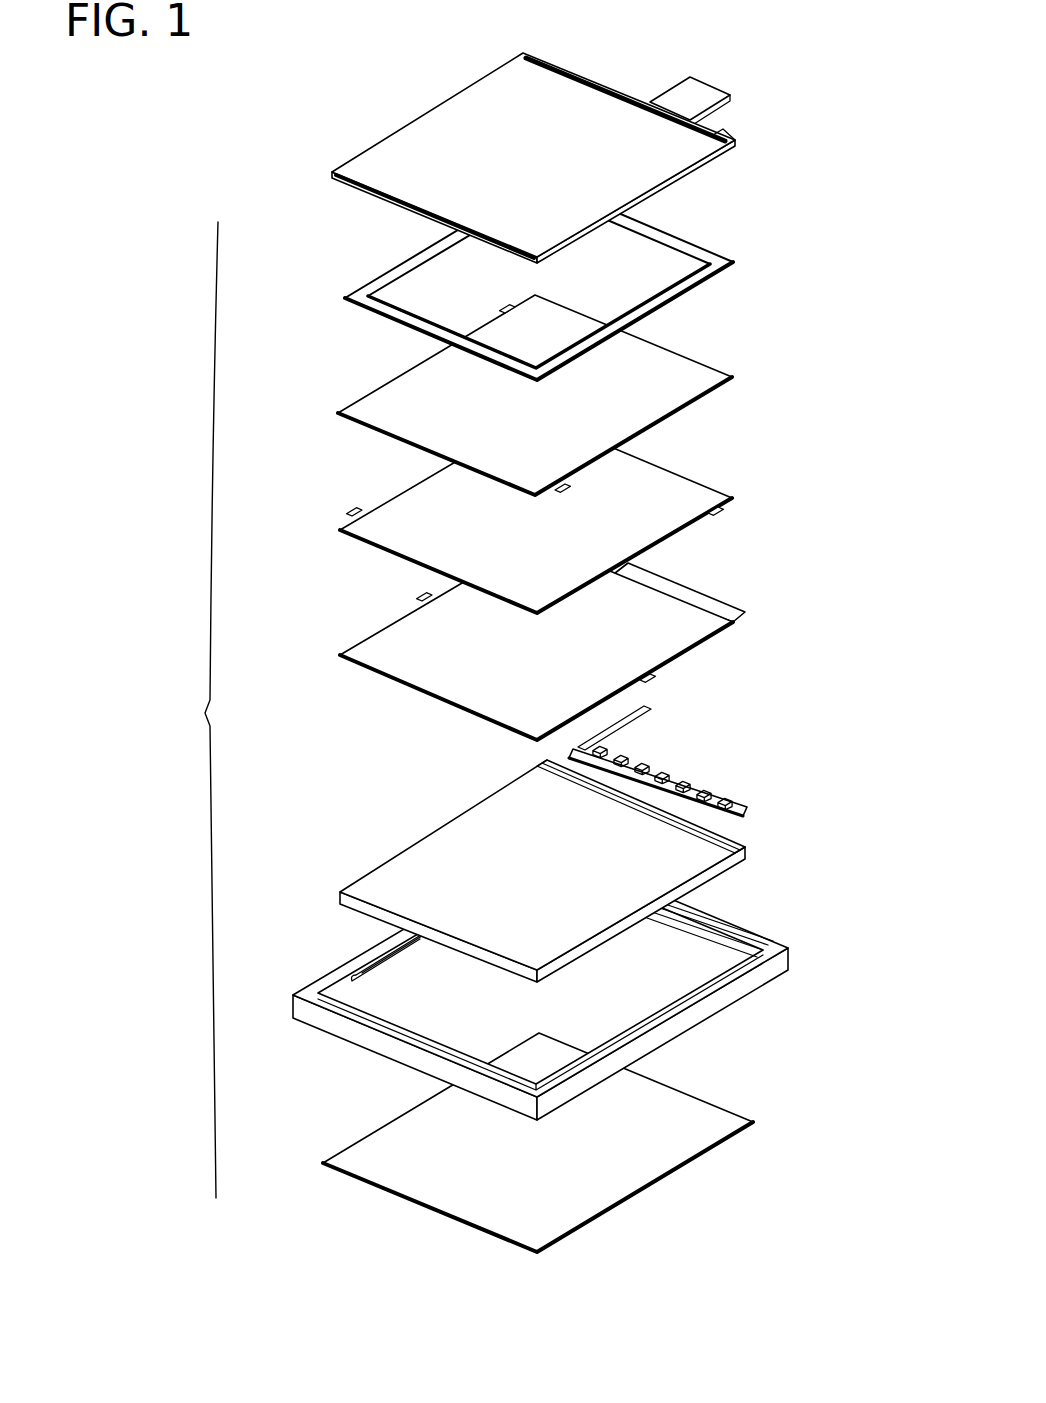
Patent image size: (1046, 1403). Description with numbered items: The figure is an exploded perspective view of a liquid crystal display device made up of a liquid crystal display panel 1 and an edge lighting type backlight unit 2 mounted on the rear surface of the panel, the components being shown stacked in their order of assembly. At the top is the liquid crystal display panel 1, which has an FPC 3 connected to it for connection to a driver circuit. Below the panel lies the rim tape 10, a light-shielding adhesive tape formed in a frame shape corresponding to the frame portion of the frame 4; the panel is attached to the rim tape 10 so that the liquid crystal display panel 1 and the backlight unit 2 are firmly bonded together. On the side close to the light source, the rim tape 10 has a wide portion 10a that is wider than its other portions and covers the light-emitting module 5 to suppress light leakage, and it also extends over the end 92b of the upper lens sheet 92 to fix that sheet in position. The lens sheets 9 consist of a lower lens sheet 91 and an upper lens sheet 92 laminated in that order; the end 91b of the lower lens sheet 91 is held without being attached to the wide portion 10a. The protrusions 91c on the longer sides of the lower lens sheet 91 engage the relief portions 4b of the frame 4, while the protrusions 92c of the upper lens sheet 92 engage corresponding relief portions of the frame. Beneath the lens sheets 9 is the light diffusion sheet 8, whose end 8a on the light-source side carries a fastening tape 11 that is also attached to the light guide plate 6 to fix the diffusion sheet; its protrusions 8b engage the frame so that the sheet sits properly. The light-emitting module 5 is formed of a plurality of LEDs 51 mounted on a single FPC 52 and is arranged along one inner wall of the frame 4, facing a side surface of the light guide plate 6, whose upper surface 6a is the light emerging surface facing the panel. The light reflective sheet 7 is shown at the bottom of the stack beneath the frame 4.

The liquid crystal display panel 1 is at (506, 152).
The backlight unit 2 is at (199, 710).
The FPC 3 is at (708, 90).
The frame 4 is at (517, 983).
The relief portions 4b is at (350, 978).
The light-emitting module 5 is at (703, 762).
The LEDs 51 is at (663, 767).
The FPC 52 is at (743, 805).
The light guide plate 6 is at (496, 871).
The upper surface 6a is at (460, 853).
The light reflective sheet 7 is at (338, 1150).
The light diffusion sheet 8 is at (530, 640).
The end 8a is at (728, 622).
The protrusions 8b is at (425, 597).
The lens sheets 9 is at (536, 442).
The lower lens sheet 91 is at (536, 514).
The end 91b is at (680, 485).
The protrusions 91c is at (355, 512).
The upper lens sheet 92 is at (508, 403).
The end 92b is at (680, 370).
The protrusions 92c is at (508, 305).
The rim tape 10 is at (512, 280).
The wide portion 10a is at (690, 238).
The fastening tape 11 is at (730, 603).